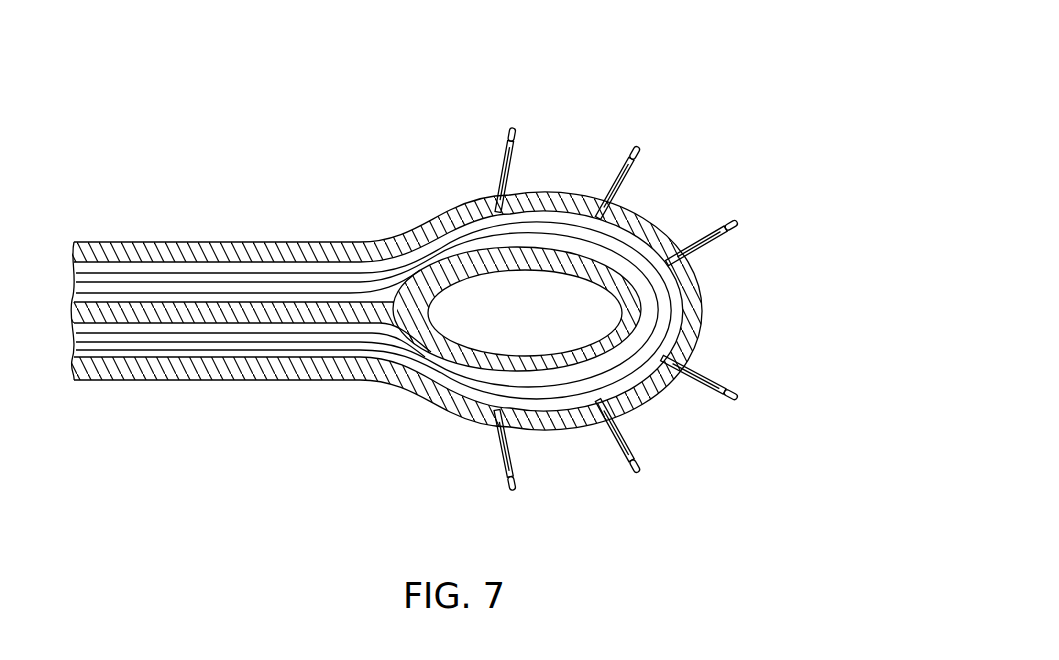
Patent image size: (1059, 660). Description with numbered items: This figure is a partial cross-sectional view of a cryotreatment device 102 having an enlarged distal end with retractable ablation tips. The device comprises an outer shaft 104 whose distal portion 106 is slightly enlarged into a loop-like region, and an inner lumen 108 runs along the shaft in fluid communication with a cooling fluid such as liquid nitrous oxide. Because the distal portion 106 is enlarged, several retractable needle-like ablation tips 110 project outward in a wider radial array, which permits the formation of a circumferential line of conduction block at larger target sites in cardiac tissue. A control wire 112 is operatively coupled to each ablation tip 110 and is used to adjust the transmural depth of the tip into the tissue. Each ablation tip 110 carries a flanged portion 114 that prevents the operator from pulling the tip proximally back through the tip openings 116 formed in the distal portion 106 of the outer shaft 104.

The cryotreatment device 102 is at (282, 158).
The outer shaft 104 is at (153, 248).
The distal portion 106 is at (410, 160).
The inner lumen 108 is at (175, 270).
The ablation tip 110 is at (515, 122).
The control wire 112 is at (320, 290).
The flanged portion 114 is at (522, 138).
The tip opening 116 is at (510, 165).